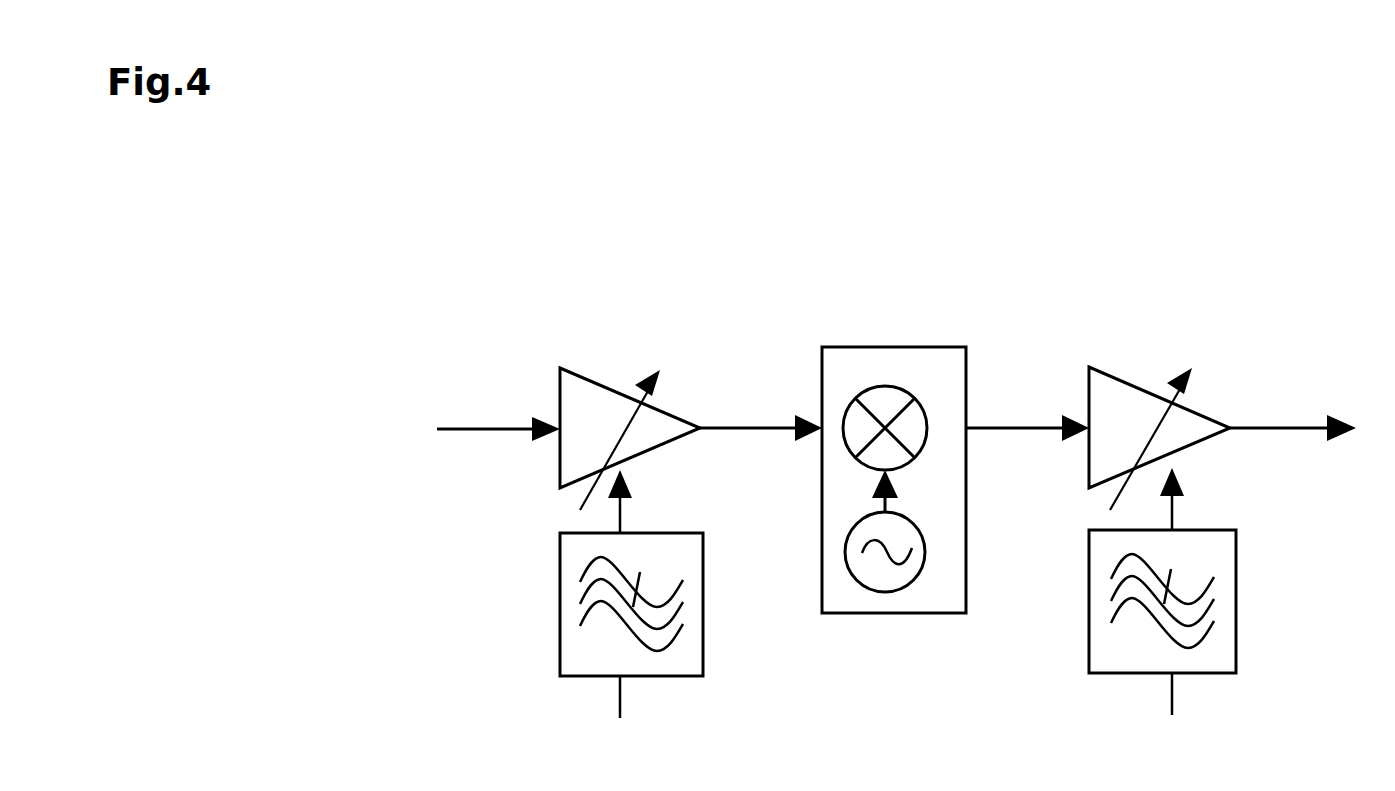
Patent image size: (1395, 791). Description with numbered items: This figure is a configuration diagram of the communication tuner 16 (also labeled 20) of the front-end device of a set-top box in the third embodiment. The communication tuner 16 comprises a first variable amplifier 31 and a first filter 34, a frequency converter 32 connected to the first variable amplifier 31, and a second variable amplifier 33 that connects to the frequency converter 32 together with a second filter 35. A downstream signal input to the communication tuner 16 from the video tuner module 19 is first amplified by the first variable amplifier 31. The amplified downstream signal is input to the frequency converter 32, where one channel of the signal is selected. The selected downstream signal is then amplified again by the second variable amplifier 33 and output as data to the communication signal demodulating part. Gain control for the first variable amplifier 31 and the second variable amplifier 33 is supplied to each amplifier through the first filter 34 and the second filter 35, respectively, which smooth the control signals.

The communication tuner 16 is at (338, 270).
The communication signal receiving module 20 is at (725, 444).
The video tuner module 19 is at (311, 430).
The first variable amplifier 31 is at (600, 408).
The frequency converter 32 is at (925, 367).
The second variable amplifier 33 is at (1130, 405).
The first filter 34 is at (580, 655).
The second filter 35 is at (1112, 653).